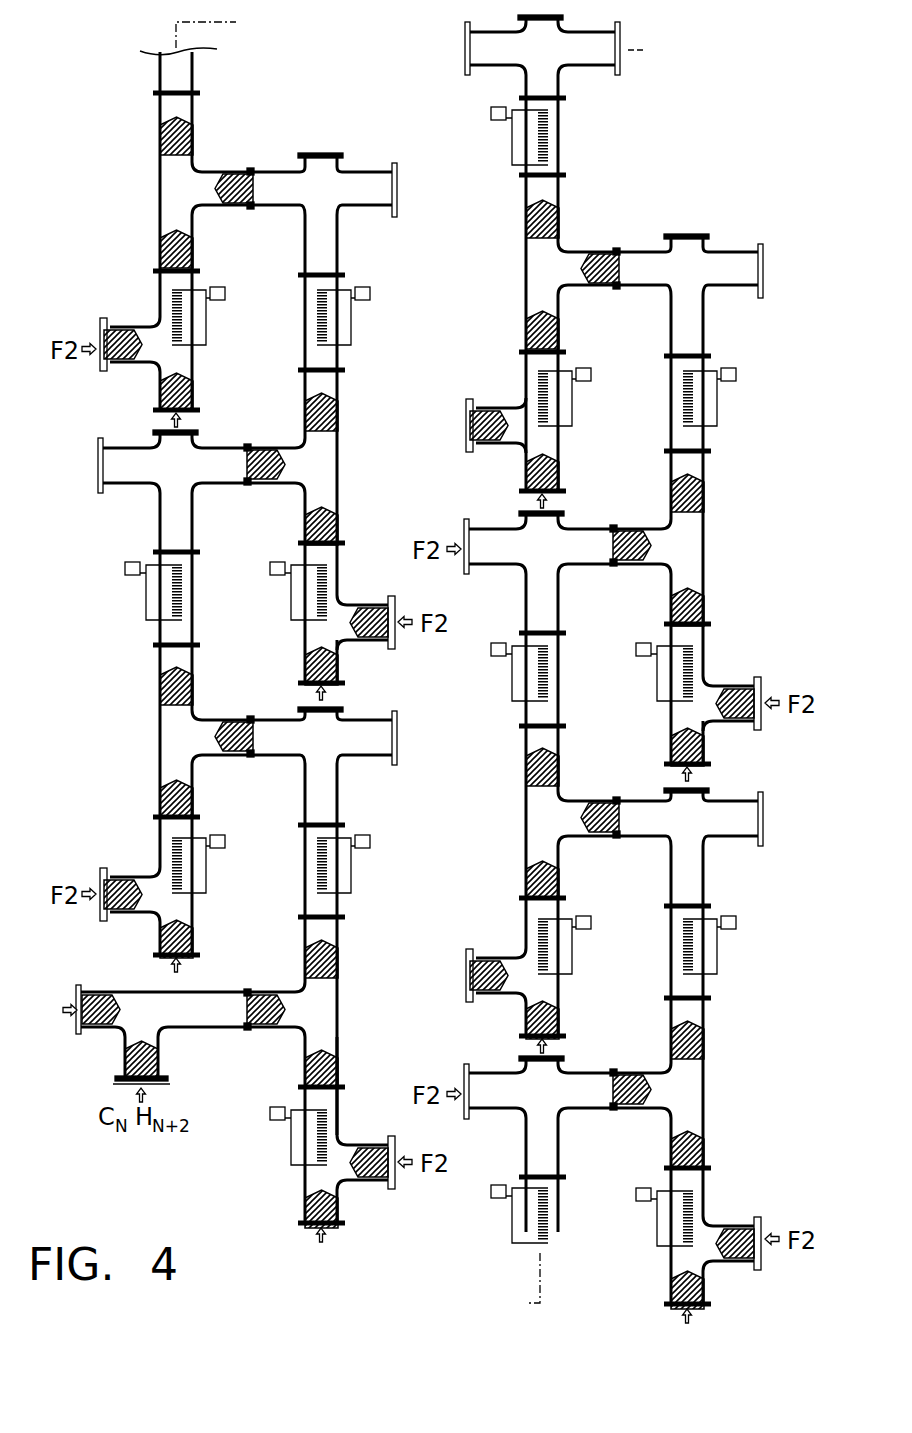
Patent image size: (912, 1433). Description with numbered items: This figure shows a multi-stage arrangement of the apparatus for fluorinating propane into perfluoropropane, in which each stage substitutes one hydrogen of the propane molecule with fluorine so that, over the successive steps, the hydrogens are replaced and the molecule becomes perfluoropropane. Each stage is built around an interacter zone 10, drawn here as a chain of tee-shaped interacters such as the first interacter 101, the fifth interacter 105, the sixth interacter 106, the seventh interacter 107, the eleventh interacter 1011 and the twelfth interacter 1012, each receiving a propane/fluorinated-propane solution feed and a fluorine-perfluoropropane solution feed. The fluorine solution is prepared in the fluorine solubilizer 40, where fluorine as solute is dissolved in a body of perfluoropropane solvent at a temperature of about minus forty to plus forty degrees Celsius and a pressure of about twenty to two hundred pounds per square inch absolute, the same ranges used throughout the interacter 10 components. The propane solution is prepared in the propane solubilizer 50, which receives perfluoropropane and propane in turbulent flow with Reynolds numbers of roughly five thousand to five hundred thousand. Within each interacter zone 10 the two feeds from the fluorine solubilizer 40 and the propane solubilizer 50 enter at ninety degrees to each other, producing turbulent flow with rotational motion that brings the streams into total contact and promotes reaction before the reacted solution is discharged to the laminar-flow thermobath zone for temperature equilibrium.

The interacter zone 10 is at (342, 1003).
The interacter zone (first stage) 101 is at (150, 727).
The interacter zone (fifth stage) 105 is at (515, 815).
The interacter zone (sixth stage) 106 is at (345, 470).
The interacter zone (seventh stage) 107 is at (518, 265).
The interacter zone (eleventh stage) 1011 is at (150, 190).
The interacter zone (twelfth stage) 1012 is at (713, 1088).
The fluorine solubilizer 40 is at (342, 1190).
The propane solubilizer 50 is at (115, 1042).